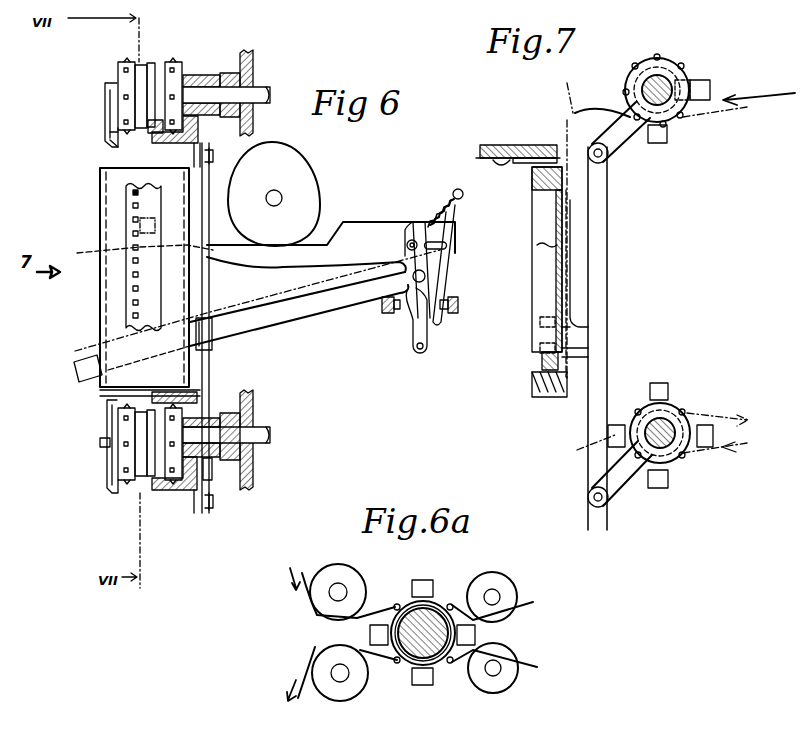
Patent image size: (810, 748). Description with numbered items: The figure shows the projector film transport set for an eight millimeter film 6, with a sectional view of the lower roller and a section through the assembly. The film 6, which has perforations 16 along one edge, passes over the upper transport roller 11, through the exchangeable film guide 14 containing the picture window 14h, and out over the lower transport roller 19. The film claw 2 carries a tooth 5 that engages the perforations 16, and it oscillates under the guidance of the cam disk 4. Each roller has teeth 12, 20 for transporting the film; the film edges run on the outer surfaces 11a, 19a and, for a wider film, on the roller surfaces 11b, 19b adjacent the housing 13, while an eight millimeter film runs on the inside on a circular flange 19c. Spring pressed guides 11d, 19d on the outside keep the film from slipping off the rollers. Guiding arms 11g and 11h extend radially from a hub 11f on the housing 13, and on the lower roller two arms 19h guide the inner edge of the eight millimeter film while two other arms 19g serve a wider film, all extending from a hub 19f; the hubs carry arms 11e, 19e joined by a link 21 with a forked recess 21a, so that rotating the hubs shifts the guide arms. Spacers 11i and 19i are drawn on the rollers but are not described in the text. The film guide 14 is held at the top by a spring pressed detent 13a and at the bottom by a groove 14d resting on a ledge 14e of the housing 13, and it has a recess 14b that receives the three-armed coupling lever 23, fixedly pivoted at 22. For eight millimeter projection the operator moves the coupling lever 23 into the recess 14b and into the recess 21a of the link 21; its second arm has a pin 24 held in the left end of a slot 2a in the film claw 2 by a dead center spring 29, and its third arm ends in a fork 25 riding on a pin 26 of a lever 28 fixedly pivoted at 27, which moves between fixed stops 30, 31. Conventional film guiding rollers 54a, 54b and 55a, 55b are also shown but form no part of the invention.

In FIG. 6, the film claw 2 is at (360, 238).
In FIG. 6, the slot 2a is at (447, 242).
In FIG. 6, the cam disk 4 is at (295, 177).
In FIG. 6, the tooth 5 is at (137, 256).
In FIG. 6, the 8 mm. film 6 is at (145, 275).
In FIG. 7, the 8 mm. film 6 is at (675, 226).
In FIG. 6A, the 8 mm. film 6 is at (533, 604).
In FIG. 6, the upper transport roller 11 is at (141, 100).
In FIG. 7, the upper transport roller 11 is at (635, 88).
In FIG. 6, the outer surface 11a is at (125, 70).
In FIG. 7, the outer surface 11a is at (687, 117).
In FIG. 6, the roller surface 11b is at (180, 64).
In FIG. 6, the spring pressed guide 11d is at (110, 140).
In FIG. 6, the arm 11e is at (198, 152).
In FIG. 7, the arm 11e is at (617, 137).
In FIG. 6, the hub 11f is at (205, 75).
In FIG. 7, the hub 11f is at (652, 72).
In FIG. 7, the guiding arm 11g is at (703, 80).
In FIG. 6, the guiding arm 11h is at (150, 133).
In FIG. 7, the guiding arm 11h is at (667, 135).
In FIG. 6, the spacer 11i is at (153, 70).
In FIG. 6, the teeth 12 is at (108, 88).
In FIG. 7, the teeth 12 is at (622, 92).
In FIG. 6, the housing 13 is at (250, 72).
In FIG. 7, the housing 13 is at (505, 145).
In FIG. 6, the spring pressed detent 13a is at (140, 168).
In FIG. 7, the spring pressed detent 13a is at (545, 160).
In FIG. 6, the film guide 14 is at (118, 323).
In FIG. 7, the film guide 14 is at (547, 202).
In FIG. 6, the recess 14b is at (102, 350).
In FIG. 7, the recess 14b is at (545, 353).
In FIG. 7, the groove 14d is at (550, 377).
In FIG. 6, the ledge 14e is at (90, 375).
In FIG. 7, the ledge 14e is at (603, 420).
In FIG. 6, the picture window 14h is at (130, 227).
In FIG. 7, the picture window 14h is at (562, 222).
In FIG. 6, the perforations 16 is at (131, 192).
In FIG. 6, the lower transport roller 19 is at (145, 443).
In FIG. 7, the lower transport roller 19 is at (660, 433).
In FIG. 6A, the lower transport roller 19 is at (403, 660).
In FIG. 6, the outer surface 19a is at (140, 480).
In FIG. 7, the outer surface 19a is at (680, 410).
In FIG. 6, the roller surface 19b is at (182, 492).
In FIG. 6A, the roller surface 19b is at (437, 603).
In FIG. 6, the circular flange 19c is at (105, 443).
In FIG. 6, the spring pressed guide 19d is at (112, 400).
In FIG. 6, the arm 19e is at (202, 507).
In FIG. 7, the arm 19e is at (617, 483).
In FIG. 6, the hub 19f is at (214, 465).
In FIG. 7, the hub 19f is at (693, 460).
In FIG. 7, the guiding arm 19g is at (613, 427).
In FIG. 6A, the guiding arm 19g is at (378, 635).
In FIG. 6, the guiding arm 19h is at (160, 388).
In FIG. 7, the guiding arm 19h is at (662, 383).
In FIG. 6A, the guiding arm 19h is at (420, 590).
In FIG. 6, the spacer 19i is at (147, 480).
In FIG. 6, the teeth 20 is at (117, 420).
In FIG. 7, the teeth 20 is at (687, 470).
In FIG. 6A, the teeth 20 is at (457, 657).
In FIG. 6, the link 21 is at (205, 280).
In FIG. 7, the link 21 is at (600, 250).
In FIG. 6, the forked recess 21a is at (212, 350).
In FIG. 7, the forked recess 21a is at (573, 318).
In FIG. 6, the pivot 22 is at (430, 273).
In FIG. 6, the coupling lever 23 is at (300, 310).
In FIG. 7, the coupling lever 23 is at (547, 367).
In FIG. 6, the pin 24 is at (410, 240).
In FIG. 6, the fork 25 is at (413, 300).
In FIG. 6, the pin 26 is at (433, 320).
In FIG. 6, the pivot 27 is at (420, 357).
In FIG. 6, the lever 28 is at (440, 283).
In FIG. 6, the dead center spring 29 is at (443, 203).
In FIG. 6, the fixed stop 30 is at (448, 310).
In FIG. 6, the fixed stop 31 is at (390, 312).
In FIG. 6A, the film guiding roller 54a is at (332, 578).
In FIG. 6A, the film guiding roller 54b is at (498, 587).
In FIG. 6A, the film guiding roller 55a is at (505, 675).
In FIG. 6A, the film guiding roller 55b is at (332, 690).